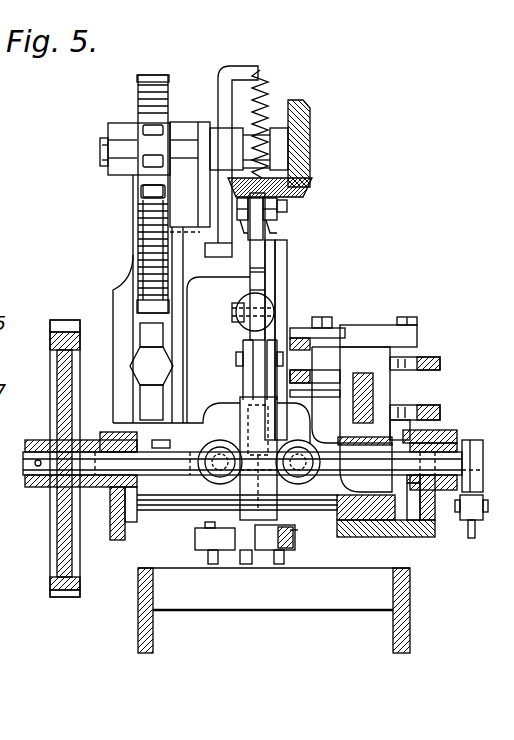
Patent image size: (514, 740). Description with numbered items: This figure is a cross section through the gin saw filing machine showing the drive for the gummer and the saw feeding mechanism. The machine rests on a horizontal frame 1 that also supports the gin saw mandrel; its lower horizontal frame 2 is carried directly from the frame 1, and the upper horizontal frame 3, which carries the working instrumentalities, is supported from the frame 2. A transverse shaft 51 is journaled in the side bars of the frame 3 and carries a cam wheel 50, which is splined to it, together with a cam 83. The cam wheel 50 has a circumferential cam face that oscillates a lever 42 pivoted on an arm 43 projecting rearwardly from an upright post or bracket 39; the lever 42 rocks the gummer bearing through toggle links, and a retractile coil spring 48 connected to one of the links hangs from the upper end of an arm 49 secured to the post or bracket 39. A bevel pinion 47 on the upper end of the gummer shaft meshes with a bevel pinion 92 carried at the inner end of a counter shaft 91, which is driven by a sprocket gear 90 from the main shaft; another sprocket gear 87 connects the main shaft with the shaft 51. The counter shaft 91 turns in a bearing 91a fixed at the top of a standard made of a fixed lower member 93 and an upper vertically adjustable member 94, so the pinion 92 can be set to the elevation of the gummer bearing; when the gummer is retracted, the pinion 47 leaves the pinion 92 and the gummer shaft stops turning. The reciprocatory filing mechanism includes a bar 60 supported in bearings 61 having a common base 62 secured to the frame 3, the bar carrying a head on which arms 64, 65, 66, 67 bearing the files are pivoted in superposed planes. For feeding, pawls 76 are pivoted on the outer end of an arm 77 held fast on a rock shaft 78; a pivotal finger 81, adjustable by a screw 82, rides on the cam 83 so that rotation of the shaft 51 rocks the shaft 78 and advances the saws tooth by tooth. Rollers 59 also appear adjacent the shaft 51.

The horizontal frame 1 is at (20, 476).
The lower horizontal frame 2 is at (138, 612).
The upper horizontal frame 3 is at (120, 538).
The upright post or bracket 39 is at (196, 430).
The lever 42 is at (258, 283).
The arm 43 is at (272, 306).
The bevel pinion 47 is at (300, 191).
The retractile coil spring 48 is at (263, 99).
The arm 49 is at (243, 72).
The cam wheel 50 is at (278, 420).
The transverse shaft 51 is at (445, 456).
The rollers 59 is at (214, 487).
The bar 60 is at (373, 399).
The bearings 61 is at (400, 357).
The common base 62 is at (370, 522).
The arm 64 is at (298, 384).
The arm 65 is at (420, 414).
The arm 66 is at (300, 336).
The arm 67 is at (420, 366).
The pawls 76 is at (207, 557).
The arm 77 is at (245, 538).
The rock shaft 78 is at (170, 511).
The pivotal finger 81 is at (460, 515).
The screw 82 is at (472, 530).
The cam 83 is at (471, 460).
The sprocket gear 87 is at (57, 538).
The sprocket gear 90 is at (137, 103).
The counter shaft 91 is at (100, 150).
The bearing 91a is at (140, 198).
The bevel pinion 92 is at (311, 130).
The fixed lower member 93 is at (185, 452).
The upper vertically adjustable member 94 is at (130, 292).